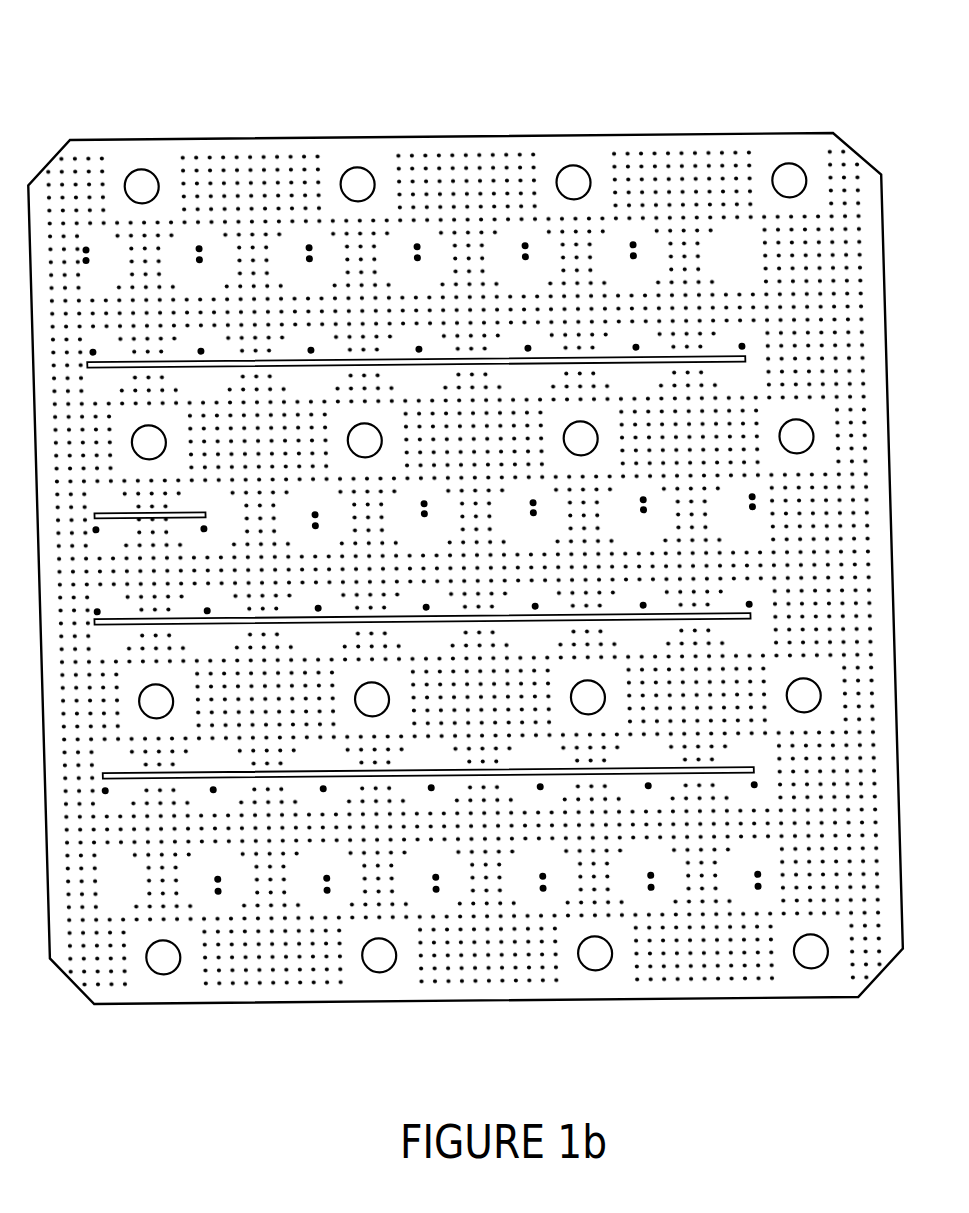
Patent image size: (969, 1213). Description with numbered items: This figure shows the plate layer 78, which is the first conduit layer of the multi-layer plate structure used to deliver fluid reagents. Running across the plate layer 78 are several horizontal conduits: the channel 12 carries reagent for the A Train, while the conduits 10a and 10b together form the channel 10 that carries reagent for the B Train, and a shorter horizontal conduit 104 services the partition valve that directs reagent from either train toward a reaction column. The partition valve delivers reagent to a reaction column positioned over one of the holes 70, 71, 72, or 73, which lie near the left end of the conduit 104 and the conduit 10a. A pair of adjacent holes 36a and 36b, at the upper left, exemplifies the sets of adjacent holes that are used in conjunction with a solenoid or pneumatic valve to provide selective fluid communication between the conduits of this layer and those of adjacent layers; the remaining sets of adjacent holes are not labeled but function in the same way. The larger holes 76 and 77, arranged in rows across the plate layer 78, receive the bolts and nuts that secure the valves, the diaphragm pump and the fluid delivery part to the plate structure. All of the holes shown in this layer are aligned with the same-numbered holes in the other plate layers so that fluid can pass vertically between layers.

The plate layer 78 is at (775, 69).
The hole 76 is at (485, 411).
The hole 77 is at (489, 725).
The A-Train channel 12 is at (668, 356).
The B-Train channel 10 is at (456, 692).
The horizontal conduit 10a is at (730, 614).
The horizontal conduit 10b is at (728, 773).
The horizontal conduit 104 is at (188, 512).
The hole 71 is at (98, 529).
The hole 70 is at (206, 529).
The hole 73 is at (98, 611).
The hole 72 is at (208, 611).
The hole 36a is at (86, 260).
The hole 36b is at (86, 250).